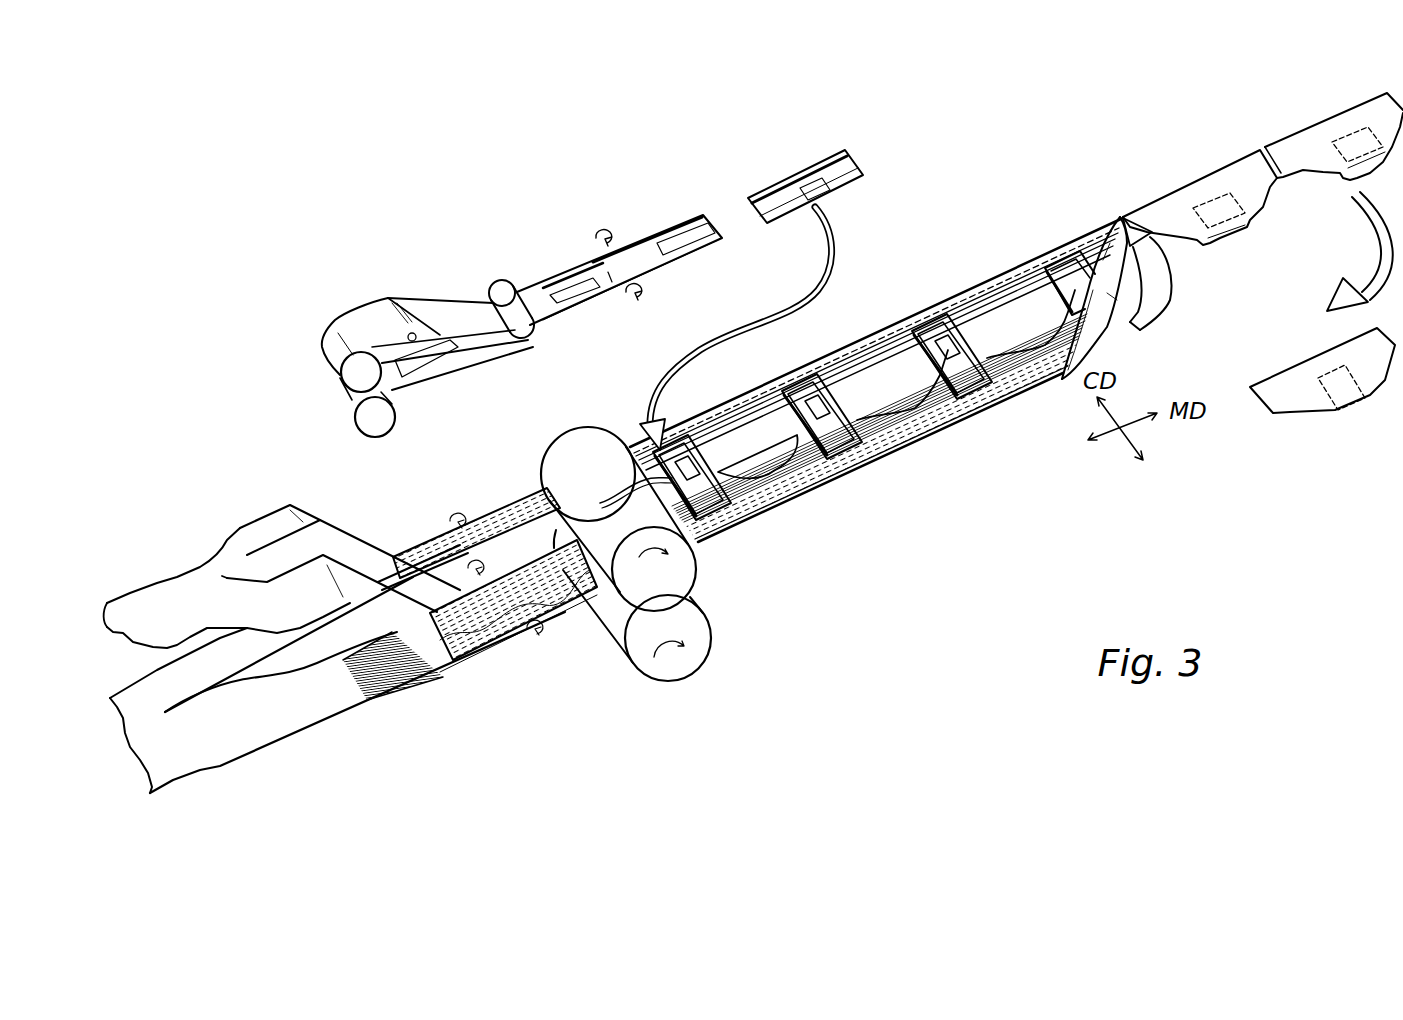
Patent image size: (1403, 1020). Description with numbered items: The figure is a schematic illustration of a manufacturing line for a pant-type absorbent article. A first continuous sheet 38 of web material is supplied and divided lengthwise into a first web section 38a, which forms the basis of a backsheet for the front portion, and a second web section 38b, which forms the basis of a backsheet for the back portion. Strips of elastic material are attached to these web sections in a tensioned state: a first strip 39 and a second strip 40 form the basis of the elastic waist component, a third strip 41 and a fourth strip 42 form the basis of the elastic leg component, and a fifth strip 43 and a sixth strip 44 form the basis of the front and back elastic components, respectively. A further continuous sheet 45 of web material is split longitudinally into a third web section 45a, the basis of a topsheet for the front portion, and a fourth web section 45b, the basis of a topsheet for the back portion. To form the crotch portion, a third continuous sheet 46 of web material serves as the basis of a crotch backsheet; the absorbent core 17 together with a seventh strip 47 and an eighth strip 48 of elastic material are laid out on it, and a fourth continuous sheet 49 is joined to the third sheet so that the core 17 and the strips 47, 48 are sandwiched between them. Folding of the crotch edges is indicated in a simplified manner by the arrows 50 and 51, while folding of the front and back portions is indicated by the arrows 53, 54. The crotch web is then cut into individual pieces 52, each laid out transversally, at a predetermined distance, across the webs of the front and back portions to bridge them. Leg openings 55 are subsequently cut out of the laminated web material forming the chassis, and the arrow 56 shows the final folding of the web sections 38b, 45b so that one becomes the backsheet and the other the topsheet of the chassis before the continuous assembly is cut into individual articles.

The absorbent core 17 is at (563, 290).
The first continuous sheet 38 is at (150, 713).
The first web section 38a is at (243, 647).
The second web section 38b is at (310, 723).
The first strip 39 is at (427, 527).
The second strip 40 is at (447, 667).
The third strip 41 is at (507, 640).
The fourth strip 42 is at (225, 578).
The fifth strip 43 is at (385, 577).
The sixth strip 44 is at (395, 657).
The further continuous sheet 45 is at (178, 605).
The third web section 45a is at (263, 520).
The fourth web section 45b is at (300, 583).
The third continuous sheet 46 is at (388, 385).
The seventh strip 47 is at (470, 357).
The eighth strip 48 is at (427, 332).
The fourth continuous sheet 49 is at (367, 320).
The arrow 50 is at (593, 232).
The arrow 51 is at (635, 307).
The piece 52 is at (860, 157).
The arrow 53 is at (482, 513).
The arrow 54 is at (543, 620).
The leg openings 55 is at (742, 473).
The arrow 56 is at (1163, 280).